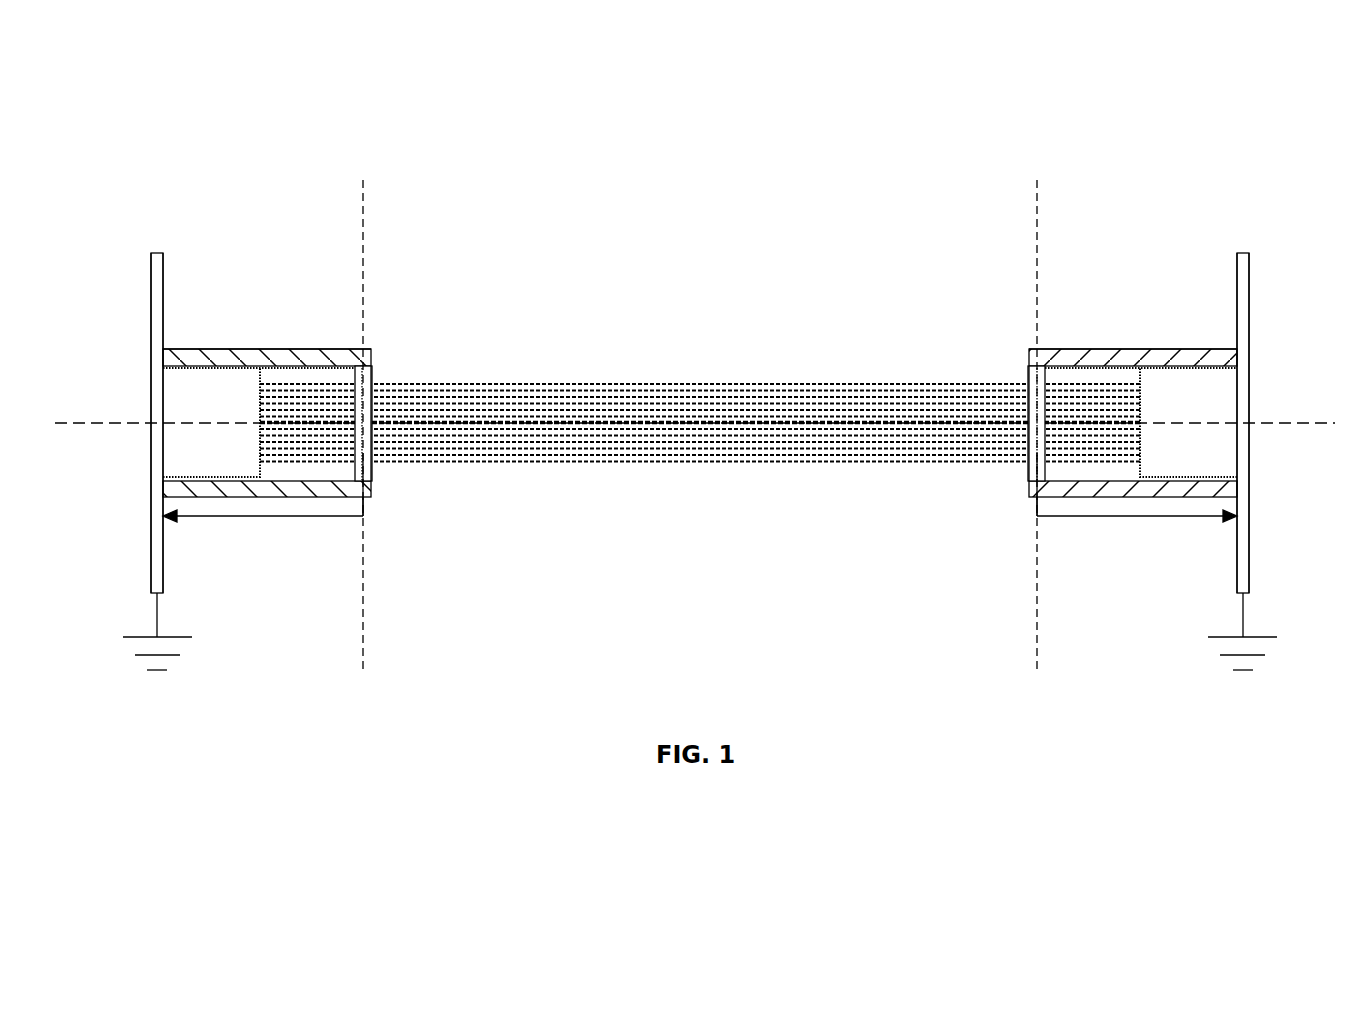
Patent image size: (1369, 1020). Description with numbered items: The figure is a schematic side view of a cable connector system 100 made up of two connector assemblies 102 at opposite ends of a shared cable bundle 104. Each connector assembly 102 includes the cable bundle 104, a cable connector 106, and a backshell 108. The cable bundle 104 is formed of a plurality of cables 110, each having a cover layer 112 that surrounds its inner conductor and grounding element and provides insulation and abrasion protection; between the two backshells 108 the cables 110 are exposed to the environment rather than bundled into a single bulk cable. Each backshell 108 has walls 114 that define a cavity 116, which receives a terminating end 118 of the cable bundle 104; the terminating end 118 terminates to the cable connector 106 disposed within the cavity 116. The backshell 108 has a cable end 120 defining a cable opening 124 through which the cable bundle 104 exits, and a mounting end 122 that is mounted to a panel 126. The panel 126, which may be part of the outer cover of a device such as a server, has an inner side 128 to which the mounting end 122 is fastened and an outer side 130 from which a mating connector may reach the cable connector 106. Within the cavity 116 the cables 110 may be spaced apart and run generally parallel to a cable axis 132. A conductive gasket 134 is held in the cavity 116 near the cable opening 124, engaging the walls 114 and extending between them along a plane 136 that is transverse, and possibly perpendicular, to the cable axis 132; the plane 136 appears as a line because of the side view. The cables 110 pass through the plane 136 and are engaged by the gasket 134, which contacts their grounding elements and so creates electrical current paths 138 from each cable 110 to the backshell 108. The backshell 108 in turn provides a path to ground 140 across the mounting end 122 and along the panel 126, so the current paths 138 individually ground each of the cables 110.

The cable connector system 100 is at (695, 153).
The connector assembly 102 is at (300, 228).
The cable bundle 104 is at (676, 378).
The cable connector 106 is at (230, 384).
The backshell 108 is at (258, 368).
The cables 110 is at (787, 388).
The cover layer 112 is at (906, 385).
The walls 114 is at (333, 348).
The cavity 116 is at (330, 472).
The terminating end 118 is at (268, 478).
The cable end 120 is at (372, 492).
The mounting end 122 is at (180, 348).
The cable opening 124 is at (362, 400).
The panel 126 is at (155, 252).
The inner side 128 is at (165, 270).
The outer side 130 is at (150, 312).
The cable axis 132 is at (92, 420).
The conductive gasket 134 is at (380, 378).
The plane 136 is at (366, 600).
The electrical current paths 138 is at (220, 516).
The ground 140 is at (130, 640).